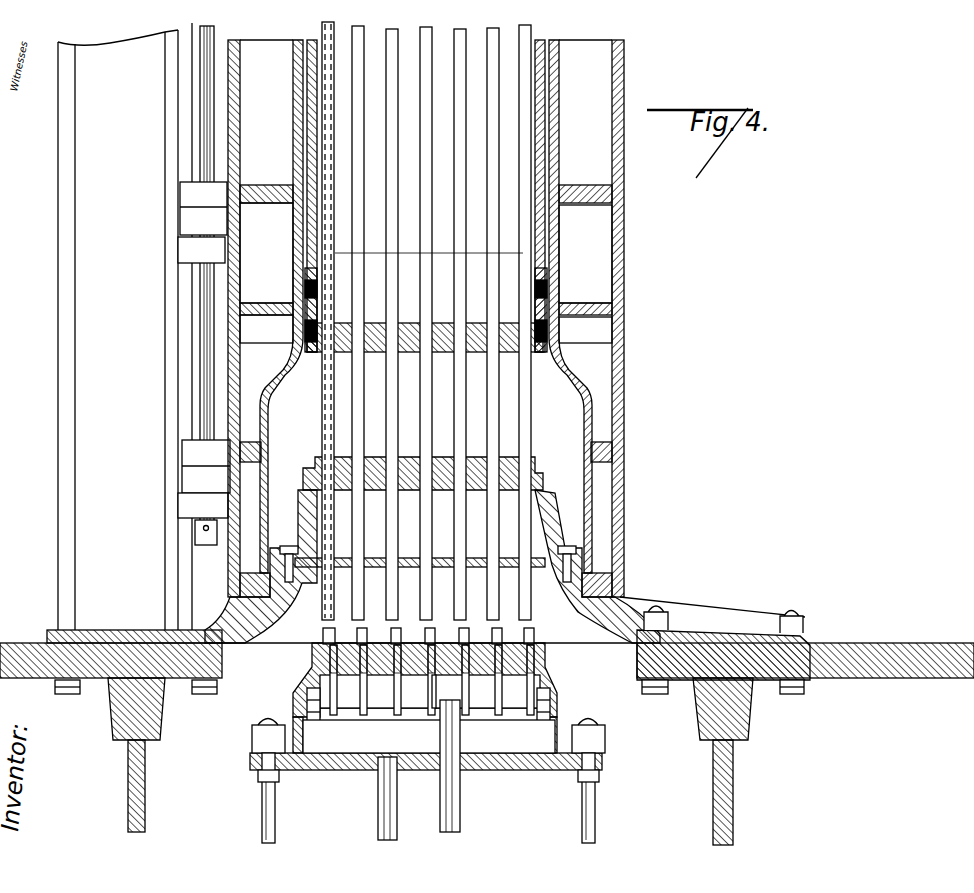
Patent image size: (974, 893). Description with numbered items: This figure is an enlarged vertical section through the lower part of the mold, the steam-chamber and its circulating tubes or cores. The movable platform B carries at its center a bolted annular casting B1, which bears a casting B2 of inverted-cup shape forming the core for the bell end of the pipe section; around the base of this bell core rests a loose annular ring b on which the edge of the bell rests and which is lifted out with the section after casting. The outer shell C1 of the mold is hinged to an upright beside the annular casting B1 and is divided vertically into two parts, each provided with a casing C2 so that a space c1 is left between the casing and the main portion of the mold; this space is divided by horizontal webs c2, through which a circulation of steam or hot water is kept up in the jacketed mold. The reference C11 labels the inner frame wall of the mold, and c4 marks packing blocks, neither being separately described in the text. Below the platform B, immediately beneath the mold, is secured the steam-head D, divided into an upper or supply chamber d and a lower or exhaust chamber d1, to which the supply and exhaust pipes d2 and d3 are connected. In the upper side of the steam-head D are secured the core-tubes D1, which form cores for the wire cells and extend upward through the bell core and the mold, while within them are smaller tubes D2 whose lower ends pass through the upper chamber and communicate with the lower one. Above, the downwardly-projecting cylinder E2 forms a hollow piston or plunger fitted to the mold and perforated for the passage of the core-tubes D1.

The outer shell of the mold C1 is at (144, 326).
The inner frame wall C'' C11 is at (426, 318).
The horizontal webs c2 is at (426, 316).
The casing C2 is at (426, 253).
The space c1 is at (426, 329).
The packing blocks c4 is at (426, 310).
The downwardly-projecting cylinder E2 is at (440, 335).
The inverted-cup-shaped casting B2 is at (545, 492).
The loose annular ring b is at (289, 546).
The annular casting B1 is at (428, 585).
The movable platform B is at (487, 725).
The core-tubes D1 is at (428, 333).
The steam-head D is at (427, 743).
The smaller tubes D2 is at (432, 680).
The upper or supply chamber d is at (457, 691).
The lower or exhaust chamber d1 is at (429, 736).
The supply pipe d2 is at (460, 766).
The exhaust pipe d3 is at (397, 798).